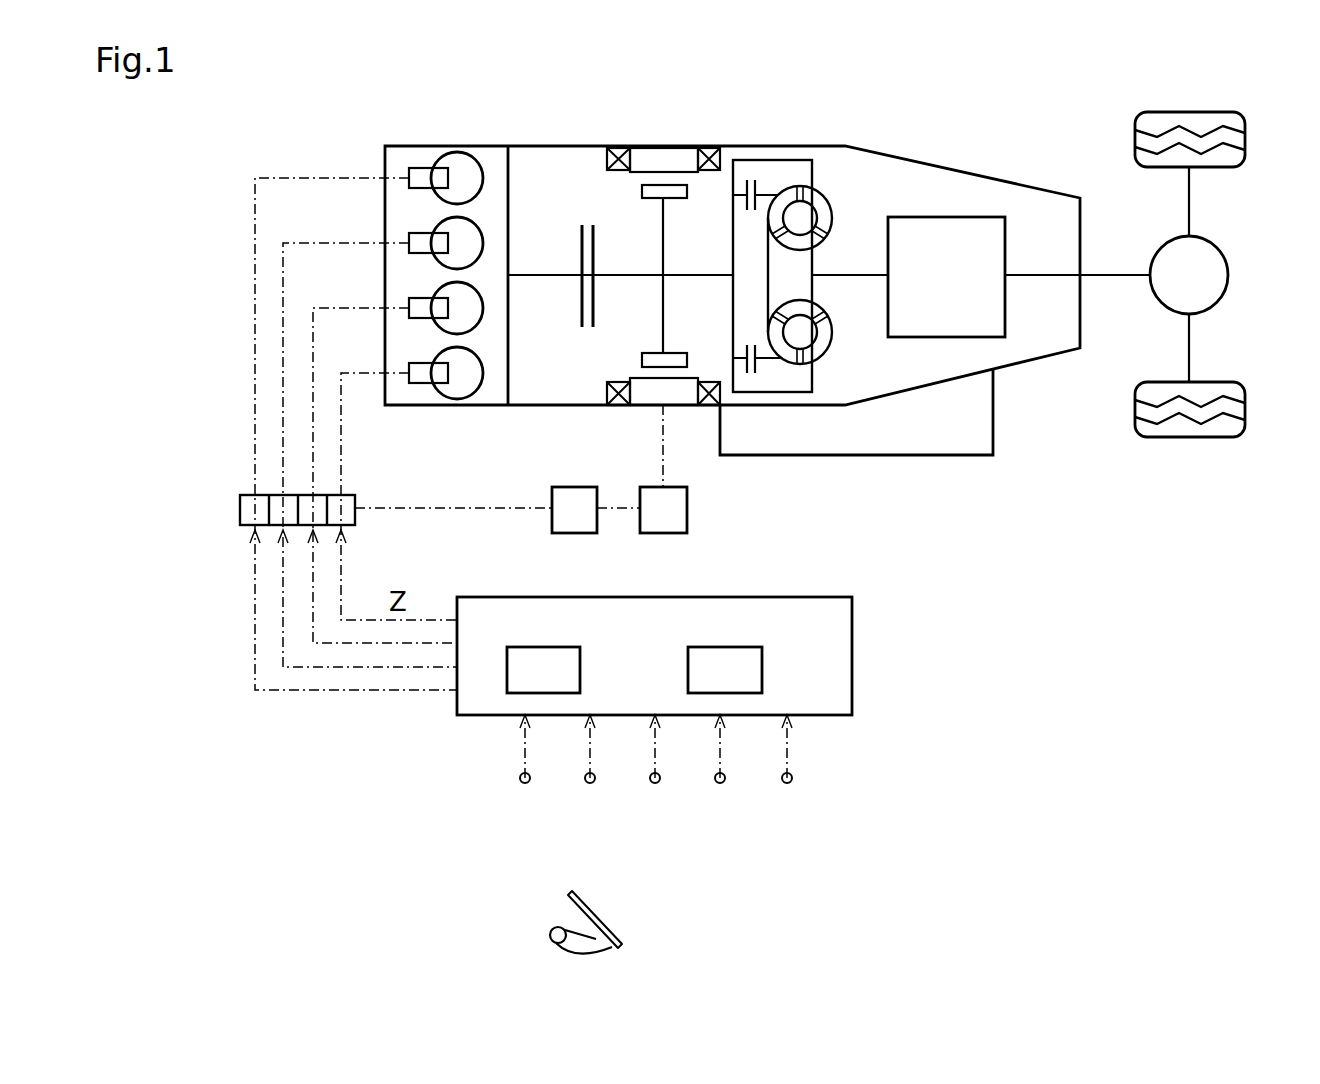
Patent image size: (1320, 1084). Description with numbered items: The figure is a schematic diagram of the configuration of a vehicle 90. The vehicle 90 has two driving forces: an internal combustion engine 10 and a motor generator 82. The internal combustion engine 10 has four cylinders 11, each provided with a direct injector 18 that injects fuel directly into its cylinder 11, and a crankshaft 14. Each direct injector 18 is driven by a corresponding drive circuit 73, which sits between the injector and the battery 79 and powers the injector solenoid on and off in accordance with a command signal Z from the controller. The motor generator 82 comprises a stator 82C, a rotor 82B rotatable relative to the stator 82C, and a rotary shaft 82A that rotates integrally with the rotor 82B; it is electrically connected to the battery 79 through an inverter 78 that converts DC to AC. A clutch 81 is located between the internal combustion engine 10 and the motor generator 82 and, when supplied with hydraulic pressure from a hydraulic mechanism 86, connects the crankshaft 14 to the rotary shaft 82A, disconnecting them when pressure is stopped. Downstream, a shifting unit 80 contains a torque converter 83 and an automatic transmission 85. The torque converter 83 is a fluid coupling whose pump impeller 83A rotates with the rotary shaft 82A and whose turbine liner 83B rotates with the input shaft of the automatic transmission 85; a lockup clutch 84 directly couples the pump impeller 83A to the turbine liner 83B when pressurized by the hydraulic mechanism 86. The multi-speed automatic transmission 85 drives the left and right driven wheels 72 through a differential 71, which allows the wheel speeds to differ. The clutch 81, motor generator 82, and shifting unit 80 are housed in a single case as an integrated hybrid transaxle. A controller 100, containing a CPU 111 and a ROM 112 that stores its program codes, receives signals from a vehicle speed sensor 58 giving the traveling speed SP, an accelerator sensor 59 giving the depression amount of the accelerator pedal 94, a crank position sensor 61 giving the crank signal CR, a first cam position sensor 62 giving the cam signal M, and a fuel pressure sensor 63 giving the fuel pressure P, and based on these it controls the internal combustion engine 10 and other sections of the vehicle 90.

The internal combustion engine 10 is at (455, 146).
The cylinder 11 is at (483, 178).
The crankshaft 14 is at (540, 275).
The direct injector 18 is at (417, 226).
The vehicle speed sensor 58 is at (525, 784).
The accelerator sensor 59 is at (590, 784).
The crank position sensor 61 is at (655, 784).
The first cam position sensor 62 is at (720, 784).
The fuel pressure sensor 63 is at (787, 784).
The differential 71 is at (1228, 275).
The driven wheels 72 is at (1245, 140).
The drive circuit 73 is at (283, 495).
The inverter 78 is at (690, 500).
The battery 79 is at (552, 500).
The shifting unit 80 is at (914, 169).
The clutch 81 is at (573, 342).
The motor generator 82 is at (648, 127).
The rotary shaft 82A is at (620, 275).
The rotor 82B is at (676, 353).
The stator 82C is at (695, 172).
The torque converter 83 is at (795, 392).
The pump impeller 83A is at (832, 203).
The turbine liner 83B is at (790, 188).
The lockup clutch 84 is at (755, 390).
The automatic transmission 85 is at (1005, 302).
The hydraulic mechanism 86 is at (993, 410).
The vehicle 90 is at (1074, 87).
The accelerator pedal 94 is at (605, 922).
The controller 100 is at (740, 597).
The CPU 111 is at (580, 665).
The ROM 112 is at (762, 665).